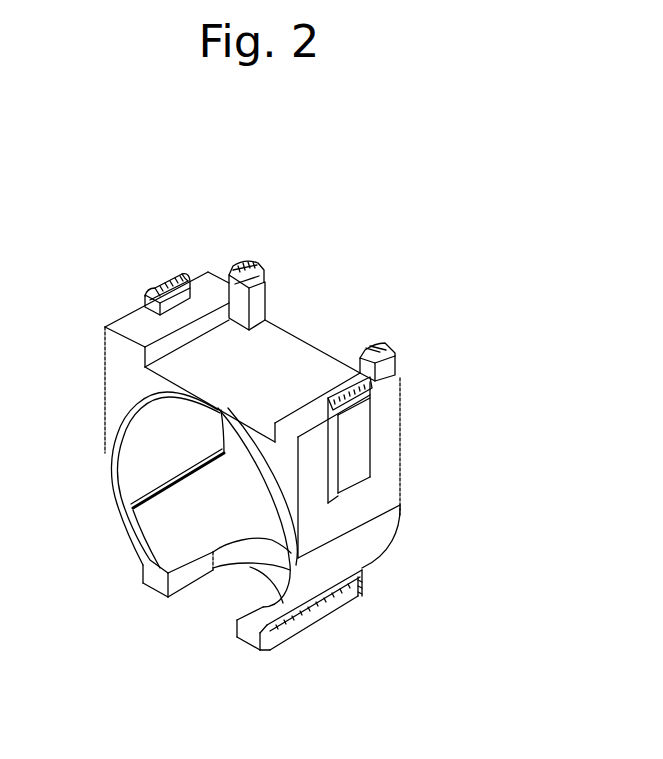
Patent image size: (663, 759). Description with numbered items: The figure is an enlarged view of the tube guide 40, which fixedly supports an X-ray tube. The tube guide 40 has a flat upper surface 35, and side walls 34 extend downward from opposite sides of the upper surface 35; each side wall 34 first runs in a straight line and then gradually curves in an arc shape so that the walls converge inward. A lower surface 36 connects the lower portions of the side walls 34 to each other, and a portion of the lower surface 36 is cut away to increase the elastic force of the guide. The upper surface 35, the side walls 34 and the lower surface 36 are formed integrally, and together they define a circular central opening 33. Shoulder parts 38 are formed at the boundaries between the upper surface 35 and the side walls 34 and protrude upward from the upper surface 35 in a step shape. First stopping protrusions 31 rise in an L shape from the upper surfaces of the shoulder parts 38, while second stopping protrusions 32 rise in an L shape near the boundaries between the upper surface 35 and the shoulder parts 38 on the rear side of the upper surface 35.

The pipe holder clip 40 is at (285, 162).
The first stopping protrusions 31 is at (167, 280).
The second stopping protrusions 32 is at (262, 272).
The circular central opening 33 is at (186, 522).
The side walls 34 is at (395, 472).
The upper surface 35 is at (298, 352).
The lower surface 36 is at (285, 538).
The shoulder parts 38 is at (208, 272).